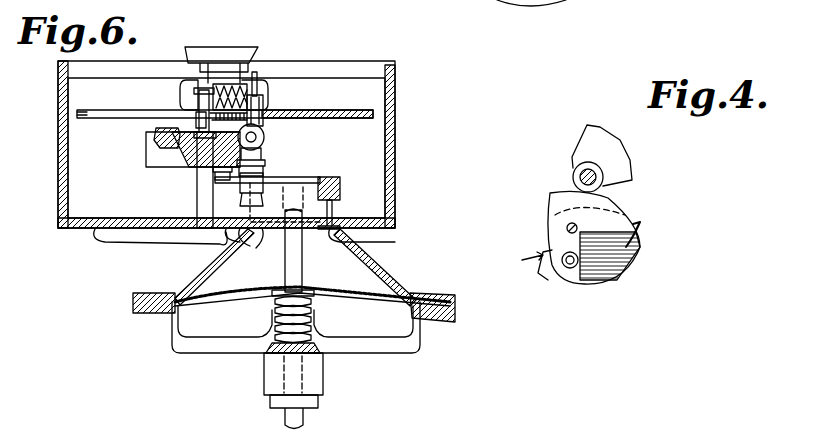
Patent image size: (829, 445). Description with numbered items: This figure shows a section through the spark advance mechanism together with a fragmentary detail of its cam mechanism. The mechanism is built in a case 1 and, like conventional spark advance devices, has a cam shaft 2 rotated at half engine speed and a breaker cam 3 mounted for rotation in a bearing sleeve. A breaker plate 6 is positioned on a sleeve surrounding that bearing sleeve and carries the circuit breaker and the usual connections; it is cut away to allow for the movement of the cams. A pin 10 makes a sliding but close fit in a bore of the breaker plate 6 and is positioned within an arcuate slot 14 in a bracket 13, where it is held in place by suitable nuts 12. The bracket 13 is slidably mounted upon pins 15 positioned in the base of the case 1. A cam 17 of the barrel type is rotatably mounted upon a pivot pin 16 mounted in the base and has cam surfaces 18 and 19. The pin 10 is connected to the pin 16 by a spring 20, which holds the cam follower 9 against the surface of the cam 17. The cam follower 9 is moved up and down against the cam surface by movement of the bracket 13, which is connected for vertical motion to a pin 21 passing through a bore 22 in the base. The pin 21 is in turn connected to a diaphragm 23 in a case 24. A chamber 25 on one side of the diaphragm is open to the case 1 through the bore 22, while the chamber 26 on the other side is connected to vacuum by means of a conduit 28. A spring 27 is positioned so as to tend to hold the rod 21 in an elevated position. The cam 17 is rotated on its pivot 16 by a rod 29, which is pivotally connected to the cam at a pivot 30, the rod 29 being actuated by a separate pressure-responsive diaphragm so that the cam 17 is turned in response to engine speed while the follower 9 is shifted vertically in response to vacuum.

In FIG. 6, the case 1 is at (58, 108).
In FIG. 6, the cam shaft 2 is at (200, 78).
In FIG. 6, the breaker cam 3 is at (258, 76).
In FIG. 6, the breaker plate 6 is at (346, 119).
In FIG. 4, the breaker plate 6 is at (582, 134).
In FIG. 6, the cam follower 9 is at (265, 133).
In FIG. 4, the cam follower 9 is at (612, 196).
In FIG. 6, the pin 10 is at (263, 108).
In FIG. 6, the nuts 12 is at (248, 196).
In FIG. 6, the bracket 13 is at (298, 190).
In FIG. 6, the arcuate slot 14 is at (303, 176).
In FIG. 6, the pins 15 is at (334, 206).
In FIG. 6, the pivot pin 16 is at (200, 200).
In FIG. 4, the pivot pin 16 is at (567, 229).
In FIG. 6, the cam 17 is at (144, 152).
In FIG. 6, the cam surface 18 is at (204, 116).
In FIG. 4, the cam surface 18 is at (552, 217).
In FIG. 6, the cam surface 19 is at (216, 172).
In FIG. 4, the cam surface 19 is at (565, 200).
In FIG. 6, the spring 20 is at (222, 63).
In FIG. 6, the pin 21 is at (306, 260).
In FIG. 6, the bore 22 is at (312, 284).
In FIG. 6, the diaphragm 23 is at (210, 284).
In FIG. 6, the case 24 is at (378, 258).
In FIG. 6, the chamber 25 is at (367, 282).
In FIG. 6, the chamber 26 is at (345, 323).
In FIG. 6, the spring 27 is at (337, 338).
In FIG. 6, the conduit 28 is at (285, 418).
In FIG. 6, the rod 29 is at (158, 128).
In FIG. 4, the rod 29 is at (540, 276).
In FIG. 4, the pivot 30 is at (573, 270).